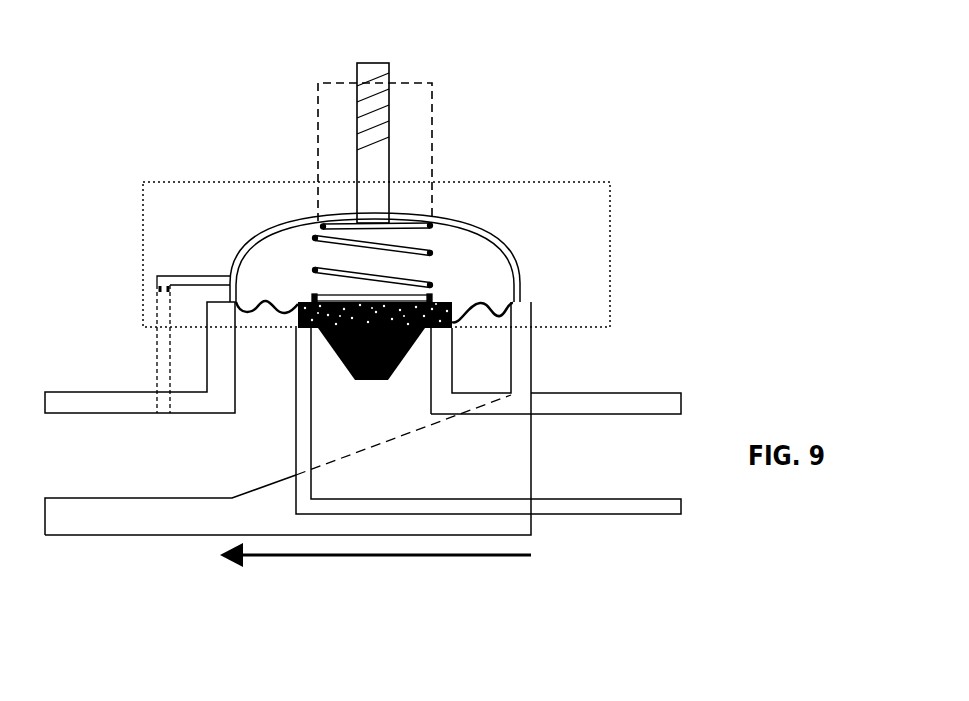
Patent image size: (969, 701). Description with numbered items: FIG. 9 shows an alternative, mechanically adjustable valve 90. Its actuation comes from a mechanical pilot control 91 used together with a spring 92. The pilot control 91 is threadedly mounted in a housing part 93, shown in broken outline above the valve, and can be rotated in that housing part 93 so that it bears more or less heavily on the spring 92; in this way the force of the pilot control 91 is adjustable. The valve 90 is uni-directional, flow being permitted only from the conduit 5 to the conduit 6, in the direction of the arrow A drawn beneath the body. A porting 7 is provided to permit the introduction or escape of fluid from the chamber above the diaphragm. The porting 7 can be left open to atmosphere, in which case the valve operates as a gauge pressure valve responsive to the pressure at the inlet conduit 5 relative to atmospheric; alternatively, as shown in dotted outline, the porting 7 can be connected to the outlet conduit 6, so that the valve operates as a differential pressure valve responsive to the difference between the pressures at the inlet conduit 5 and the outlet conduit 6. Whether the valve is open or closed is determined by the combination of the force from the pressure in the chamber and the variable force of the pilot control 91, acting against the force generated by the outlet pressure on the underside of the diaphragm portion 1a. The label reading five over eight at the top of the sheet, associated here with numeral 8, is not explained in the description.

The valve 90 is at (652, 150).
The pilot control 91 is at (388, 68).
The spring 92 is at (415, 254).
The housing part 93 is at (318, 98).
The diaphragm portion 1a is at (298, 303).
The porting 7 is at (160, 304).
The conduit 6 is at (187, 476).
The conduit 5 is at (645, 480).
The port 8 is at (370, 22).
The arrow A is at (358, 556).